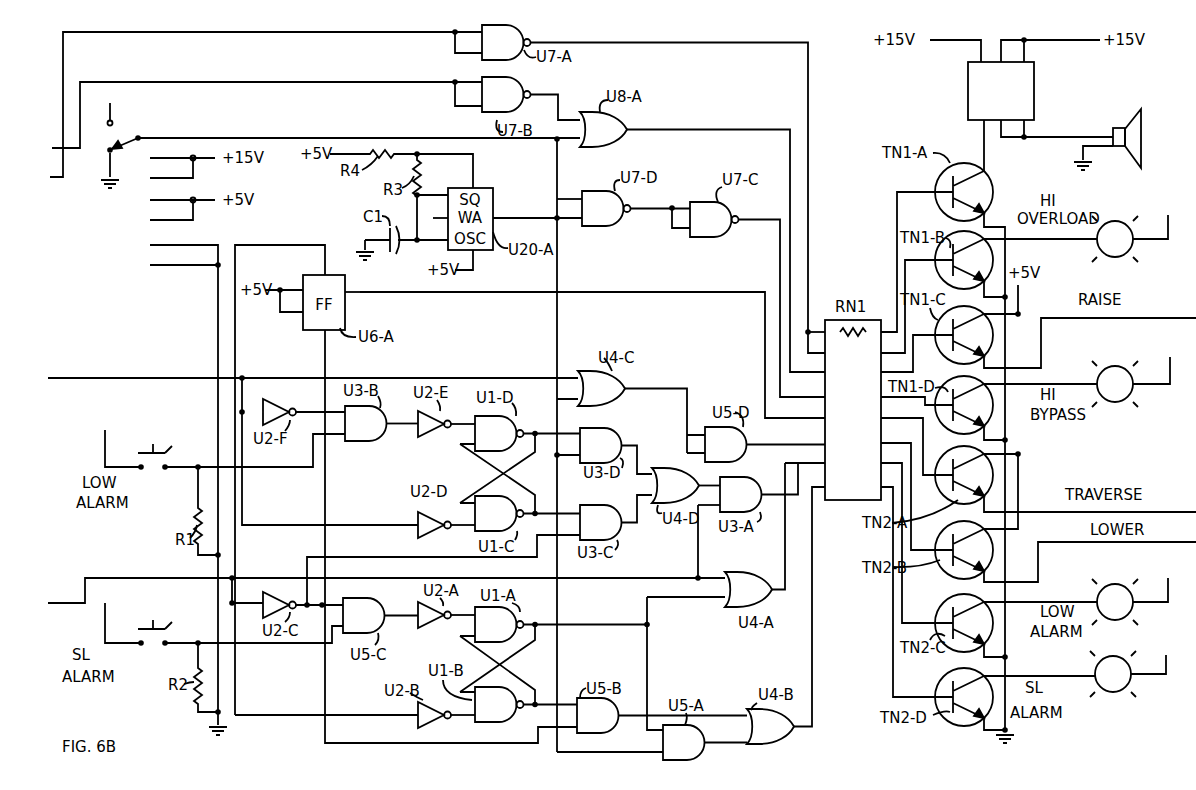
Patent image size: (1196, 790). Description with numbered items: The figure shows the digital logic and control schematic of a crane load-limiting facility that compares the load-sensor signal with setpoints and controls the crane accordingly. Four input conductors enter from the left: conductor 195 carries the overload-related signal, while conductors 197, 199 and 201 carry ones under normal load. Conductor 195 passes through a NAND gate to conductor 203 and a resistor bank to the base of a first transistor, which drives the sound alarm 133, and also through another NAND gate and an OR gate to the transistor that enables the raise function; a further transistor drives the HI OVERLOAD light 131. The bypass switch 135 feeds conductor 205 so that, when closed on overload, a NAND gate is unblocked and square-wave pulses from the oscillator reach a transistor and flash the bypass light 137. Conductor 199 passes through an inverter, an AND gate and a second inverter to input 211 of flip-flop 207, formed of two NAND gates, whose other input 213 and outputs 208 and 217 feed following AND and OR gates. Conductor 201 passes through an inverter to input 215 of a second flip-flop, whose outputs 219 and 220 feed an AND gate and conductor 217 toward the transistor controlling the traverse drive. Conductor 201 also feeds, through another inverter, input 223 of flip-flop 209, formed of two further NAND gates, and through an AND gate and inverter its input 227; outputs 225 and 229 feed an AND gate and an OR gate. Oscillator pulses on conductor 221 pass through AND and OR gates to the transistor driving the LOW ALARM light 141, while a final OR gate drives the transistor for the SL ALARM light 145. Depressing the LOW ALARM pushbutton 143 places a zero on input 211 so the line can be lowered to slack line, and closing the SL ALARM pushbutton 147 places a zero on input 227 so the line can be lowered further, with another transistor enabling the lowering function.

The HI OVERLOAD light 131 is at (1132, 248).
The sound alarm 133 is at (1143, 113).
The bypass switch 135 is at (132, 135).
The bypass light 137 is at (1120, 366).
The LOW ALARM light 141 is at (1107, 582).
The LOW ALARM pushbutton 143 is at (170, 450).
The SL ALARM light 145 is at (1126, 690).
The SL ALARM pushbutton 147 is at (170, 626).
The conductor 195 is at (348, 80).
The conductor 197 is at (57, 178).
The conductor 199 is at (97, 379).
The conductor 201 is at (58, 603).
The conductor 203 is at (809, 88).
The conductor 205 is at (352, 139).
The flip-flop 207 is at (480, 477).
The output of flip-flop 207 208 is at (538, 378).
The flip-flop 209 is at (501, 664).
The input of flip-flop 207 211 is at (470, 427).
The input of flip-flop 207 213 is at (460, 528).
The input of flip-flop U6-A 215 is at (323, 262).
The output of flip-flop 207 / conductor 217 is at (648, 292).
The output of flip-flop U6-A 219 is at (325, 335).
The output of flip-flop U6-A 220 is at (352, 292).
The conductor 221 is at (557, 265).
The input of flip-flop 209 223 is at (456, 719).
The output of flip-flop 209 225 is at (547, 703).
The input of flip-flop 209 227 is at (455, 622).
The output of flip-flop 209 229 is at (543, 623).